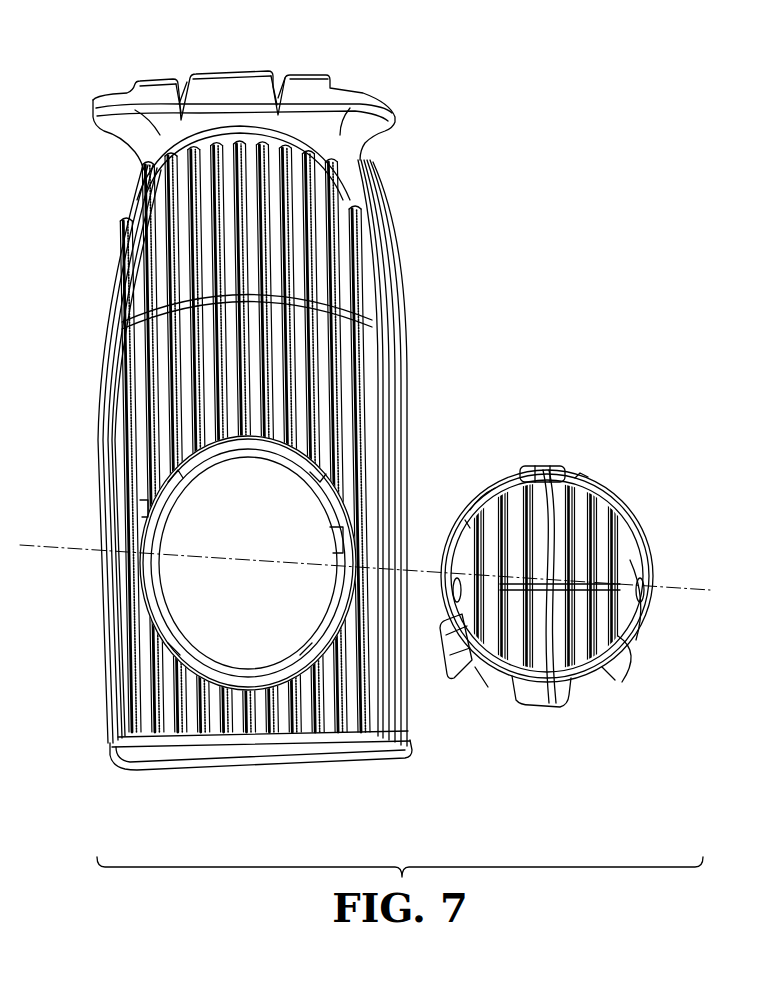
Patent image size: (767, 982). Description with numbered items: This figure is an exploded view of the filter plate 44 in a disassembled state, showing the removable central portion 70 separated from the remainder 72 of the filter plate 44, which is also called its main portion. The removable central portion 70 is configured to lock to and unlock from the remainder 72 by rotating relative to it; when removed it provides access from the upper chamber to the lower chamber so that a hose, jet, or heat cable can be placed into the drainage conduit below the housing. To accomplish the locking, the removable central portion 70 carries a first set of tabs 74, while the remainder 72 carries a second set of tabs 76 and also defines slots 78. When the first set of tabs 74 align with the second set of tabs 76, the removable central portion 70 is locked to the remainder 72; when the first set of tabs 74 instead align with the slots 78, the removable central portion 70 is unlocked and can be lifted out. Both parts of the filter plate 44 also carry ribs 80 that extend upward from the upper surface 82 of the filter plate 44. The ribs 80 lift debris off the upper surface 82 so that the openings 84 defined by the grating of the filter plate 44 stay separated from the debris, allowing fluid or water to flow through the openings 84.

The filter plate 44 is at (522, 106).
The removable central portion 70 is at (618, 488).
The remainder of the filter plate 72 is at (108, 261).
The first set of tabs 74 is at (538, 470).
The second set of tabs 76 is at (240, 445).
The slots 78 is at (325, 497).
The ribs 80 is at (310, 230).
The upper surface 82 is at (167, 733).
The openings 84 is at (320, 358).